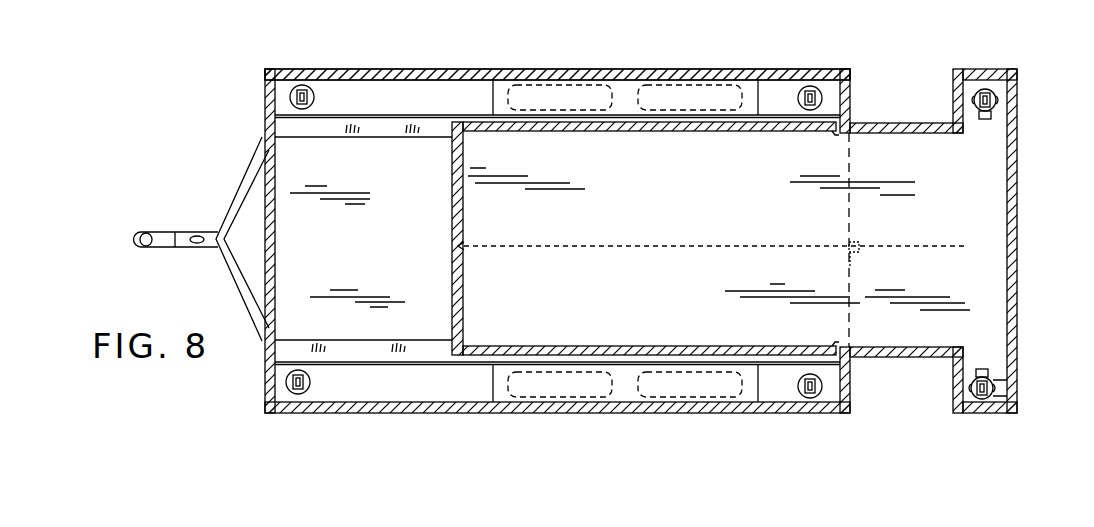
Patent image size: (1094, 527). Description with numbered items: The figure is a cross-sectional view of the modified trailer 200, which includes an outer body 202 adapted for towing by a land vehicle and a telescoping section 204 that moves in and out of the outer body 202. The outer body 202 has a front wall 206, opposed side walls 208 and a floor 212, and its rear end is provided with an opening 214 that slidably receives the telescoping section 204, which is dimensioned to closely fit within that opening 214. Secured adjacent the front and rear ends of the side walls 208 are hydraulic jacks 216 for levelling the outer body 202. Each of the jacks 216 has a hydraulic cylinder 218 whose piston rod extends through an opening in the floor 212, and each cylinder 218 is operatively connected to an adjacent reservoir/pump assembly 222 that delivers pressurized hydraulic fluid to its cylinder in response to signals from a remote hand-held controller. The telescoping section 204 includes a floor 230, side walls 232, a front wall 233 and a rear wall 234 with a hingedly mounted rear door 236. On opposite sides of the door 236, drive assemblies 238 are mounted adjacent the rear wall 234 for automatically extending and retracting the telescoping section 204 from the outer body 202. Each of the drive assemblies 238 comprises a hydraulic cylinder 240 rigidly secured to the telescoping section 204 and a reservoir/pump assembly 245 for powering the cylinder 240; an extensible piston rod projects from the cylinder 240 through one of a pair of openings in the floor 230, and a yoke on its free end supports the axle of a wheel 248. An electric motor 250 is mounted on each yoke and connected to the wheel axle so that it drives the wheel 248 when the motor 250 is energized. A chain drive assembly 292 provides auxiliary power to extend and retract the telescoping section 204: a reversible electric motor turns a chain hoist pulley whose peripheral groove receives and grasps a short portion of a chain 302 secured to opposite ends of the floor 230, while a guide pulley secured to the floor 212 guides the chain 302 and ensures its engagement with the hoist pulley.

The modified trailer 200 is at (386, 48).
The outer body 202 is at (338, 67).
The telescoping section 204 is at (890, 121).
The front wall 206 is at (270, 126).
The side walls 208 is at (437, 69).
The floor 212 is at (348, 184).
The opening 214 is at (855, 362).
The hydraulic jacks 216 is at (299, 86).
The hydraulic cylinder 218 is at (316, 97).
The reservoir/pump assembly 222 is at (295, 95).
The floor 230 is at (691, 217).
The side walls 232 is at (645, 132).
The front wall 233 is at (463, 298).
The rear wall 234 is at (1013, 112).
The rear door 236 is at (1015, 232).
The drive assemblies 238 is at (1013, 372).
The hydraulic cylinder 240 is at (1006, 386).
The reservoir/pump assembly 245 is at (985, 89).
The wheel 248 is at (1001, 100).
The electric motor 250 is at (983, 121).
The chain drive assembly 292 is at (866, 238).
The chain 302 is at (565, 245).